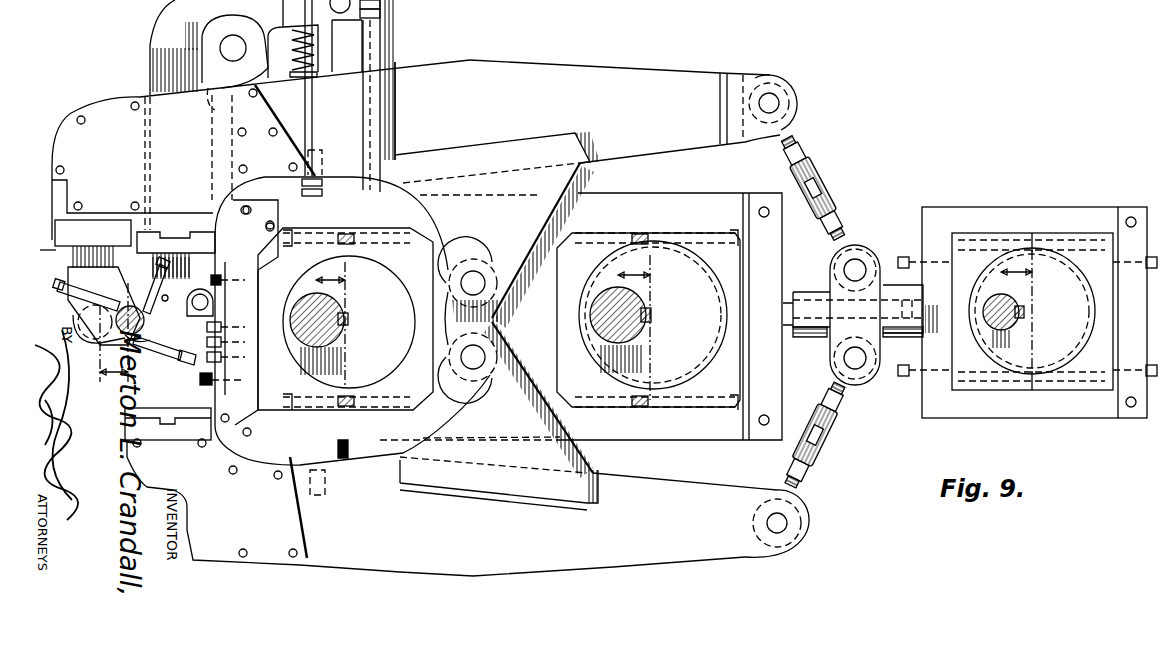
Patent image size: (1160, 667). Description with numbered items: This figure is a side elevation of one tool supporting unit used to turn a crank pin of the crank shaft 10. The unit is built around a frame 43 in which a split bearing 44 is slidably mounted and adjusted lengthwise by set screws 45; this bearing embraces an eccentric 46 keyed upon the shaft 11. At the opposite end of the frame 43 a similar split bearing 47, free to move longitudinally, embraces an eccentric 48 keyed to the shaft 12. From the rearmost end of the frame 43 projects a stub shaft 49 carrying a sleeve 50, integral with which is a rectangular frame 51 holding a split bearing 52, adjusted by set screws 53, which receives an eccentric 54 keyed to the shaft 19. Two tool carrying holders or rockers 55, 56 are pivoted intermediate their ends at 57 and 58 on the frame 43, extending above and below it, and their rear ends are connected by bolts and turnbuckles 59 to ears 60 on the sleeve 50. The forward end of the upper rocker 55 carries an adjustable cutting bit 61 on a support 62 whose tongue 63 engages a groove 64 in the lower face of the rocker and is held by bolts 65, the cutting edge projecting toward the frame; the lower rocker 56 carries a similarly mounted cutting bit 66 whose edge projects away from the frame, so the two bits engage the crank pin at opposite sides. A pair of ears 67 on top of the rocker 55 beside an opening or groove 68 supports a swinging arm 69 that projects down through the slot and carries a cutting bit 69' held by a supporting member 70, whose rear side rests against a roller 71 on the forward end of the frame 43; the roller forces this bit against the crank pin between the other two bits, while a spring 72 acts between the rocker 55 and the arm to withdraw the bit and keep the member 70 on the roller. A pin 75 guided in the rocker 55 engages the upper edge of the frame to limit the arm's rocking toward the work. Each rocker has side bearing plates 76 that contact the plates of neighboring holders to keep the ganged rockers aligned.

The crank shaft 10 is at (100, 330).
The shaft 11 is at (345, 326).
The shaft 12 is at (650, 322).
The shaft 19 is at (1003, 310).
The frame 43 is at (662, 206).
The split bearing 44 is at (305, 393).
The set screws 45 is at (244, 275).
The eccentric 46 is at (400, 284).
The split bearing 47 is at (625, 392).
The eccentric 48 is at (592, 288).
The stub shaft 49 is at (790, 328).
The sleeve 50 is at (808, 293).
The rectangular frame 51 is at (1002, 216).
The split bearing 52 is at (1062, 382).
The set screws 53 is at (904, 256).
The eccentric 54 is at (1003, 378).
The tool carrying holder or rocker 55 is at (560, 68).
The tool carrying holder or rocker 56 is at (688, 489).
The pivot 57 is at (473, 283).
The pivot 58 is at (474, 362).
The bolts and turnbuckles 59 is at (840, 183).
The ears 60 is at (860, 252).
The cutting bit 61 is at (75, 300).
The support 62 is at (72, 266).
The tongue 63 is at (55, 234).
The groove 64 is at (93, 217).
The bolts 65 is at (55, 250).
The cutting bit 66 is at (150, 350).
The ears 67 is at (207, 40).
The opening or groove 68 is at (145, 148).
The swinging arm 69 is at (150, 47).
The cutting bit 69' is at (160, 327).
The supporting member 70 is at (158, 282).
The roller 71 is at (214, 312).
The spring 72 is at (288, 57).
The pin 75 is at (382, 8).
The side bearing plates 76 is at (65, 130).